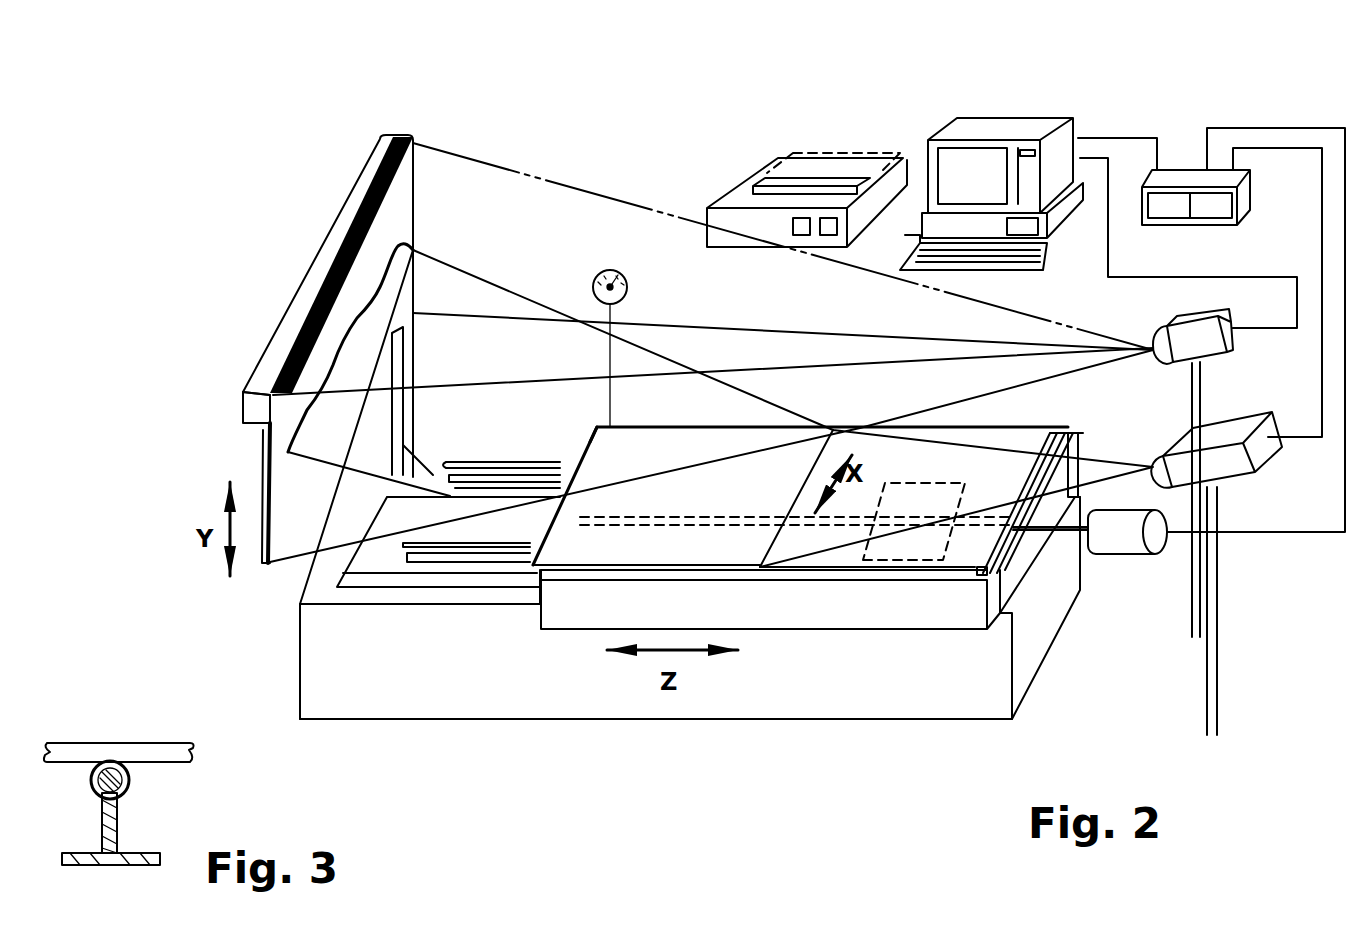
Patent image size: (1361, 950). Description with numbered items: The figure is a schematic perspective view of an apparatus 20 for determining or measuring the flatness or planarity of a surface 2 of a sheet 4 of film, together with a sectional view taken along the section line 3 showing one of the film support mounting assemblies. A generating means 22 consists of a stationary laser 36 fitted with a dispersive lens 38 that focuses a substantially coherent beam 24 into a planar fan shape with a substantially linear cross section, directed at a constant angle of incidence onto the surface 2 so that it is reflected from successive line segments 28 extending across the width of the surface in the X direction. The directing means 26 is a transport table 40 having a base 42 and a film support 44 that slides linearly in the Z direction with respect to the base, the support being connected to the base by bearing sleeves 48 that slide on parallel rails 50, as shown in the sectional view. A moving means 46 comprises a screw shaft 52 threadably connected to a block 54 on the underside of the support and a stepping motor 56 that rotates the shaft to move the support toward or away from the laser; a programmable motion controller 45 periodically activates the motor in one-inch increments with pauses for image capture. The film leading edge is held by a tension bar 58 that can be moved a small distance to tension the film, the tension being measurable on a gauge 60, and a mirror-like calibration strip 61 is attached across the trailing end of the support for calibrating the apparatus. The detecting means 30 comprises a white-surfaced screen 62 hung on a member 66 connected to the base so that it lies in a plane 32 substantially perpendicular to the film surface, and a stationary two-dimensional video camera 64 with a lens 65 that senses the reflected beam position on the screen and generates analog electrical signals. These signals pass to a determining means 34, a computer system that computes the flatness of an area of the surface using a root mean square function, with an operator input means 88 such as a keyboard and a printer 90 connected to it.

In FIG. 2, the surface 2 is at (560, 550).
In FIG. 2, the section line 3— 3 is at (455, 520).
In FIG. 2, the sheet of film 4 is at (645, 459).
In FIG. 2, the apparatus 20 is at (554, 766).
In FIG. 2, the generating means 22 is at (1255, 478).
In FIG. 2, the beam 24 is at (1080, 456).
In FIG. 2, the directing means 26 is at (1066, 701).
In FIG. 2, the line segment 28 is at (805, 492).
In FIG. 2, the detecting means 30 is at (1155, 330).
In FIG. 2, the plane 32 is at (398, 222).
In FIG. 2, the determining means 34 is at (1084, 126).
In FIG. 2, the laser 36 is at (1225, 422).
In FIG. 2, the dispersive lens 38 is at (1152, 462).
In FIG. 2, the transport table 40 is at (370, 696).
In FIG. 2, the base 42 is at (505, 687).
In FIG. 3, the base 42 is at (107, 866).
In FIG. 2, the film support 44 is at (770, 605).
In FIG. 3, the film support 44 is at (100, 743).
In FIG. 2, the programmable motion controller 45 is at (1245, 210).
In FIG. 2, the moving means 46 is at (1055, 556).
In FIG. 3, the bearing sleeve 48 is at (88, 784).
In FIG. 3, the rail 50 is at (120, 832).
In FIG. 2, the screw shaft 52 is at (636, 517).
In FIG. 2, the block 54 is at (883, 480).
In FIG. 2, the stepping motor 56 is at (1130, 545).
In FIG. 2, the tension bar 58 is at (592, 428).
In FIG. 2, the gauge 60 is at (660, 293).
In FIG. 2, the calibration strip 61 is at (986, 600).
In FIG. 2, the screen 62 is at (420, 165).
In FIG. 2, the video camera 64 is at (1202, 320).
In FIG. 2, the lens 65 is at (1163, 366).
In FIG. 2, the member 66 is at (312, 268).
In FIG. 2, the operator input means 88 is at (1043, 263).
In FIG. 2, the printer 90 is at (810, 155).